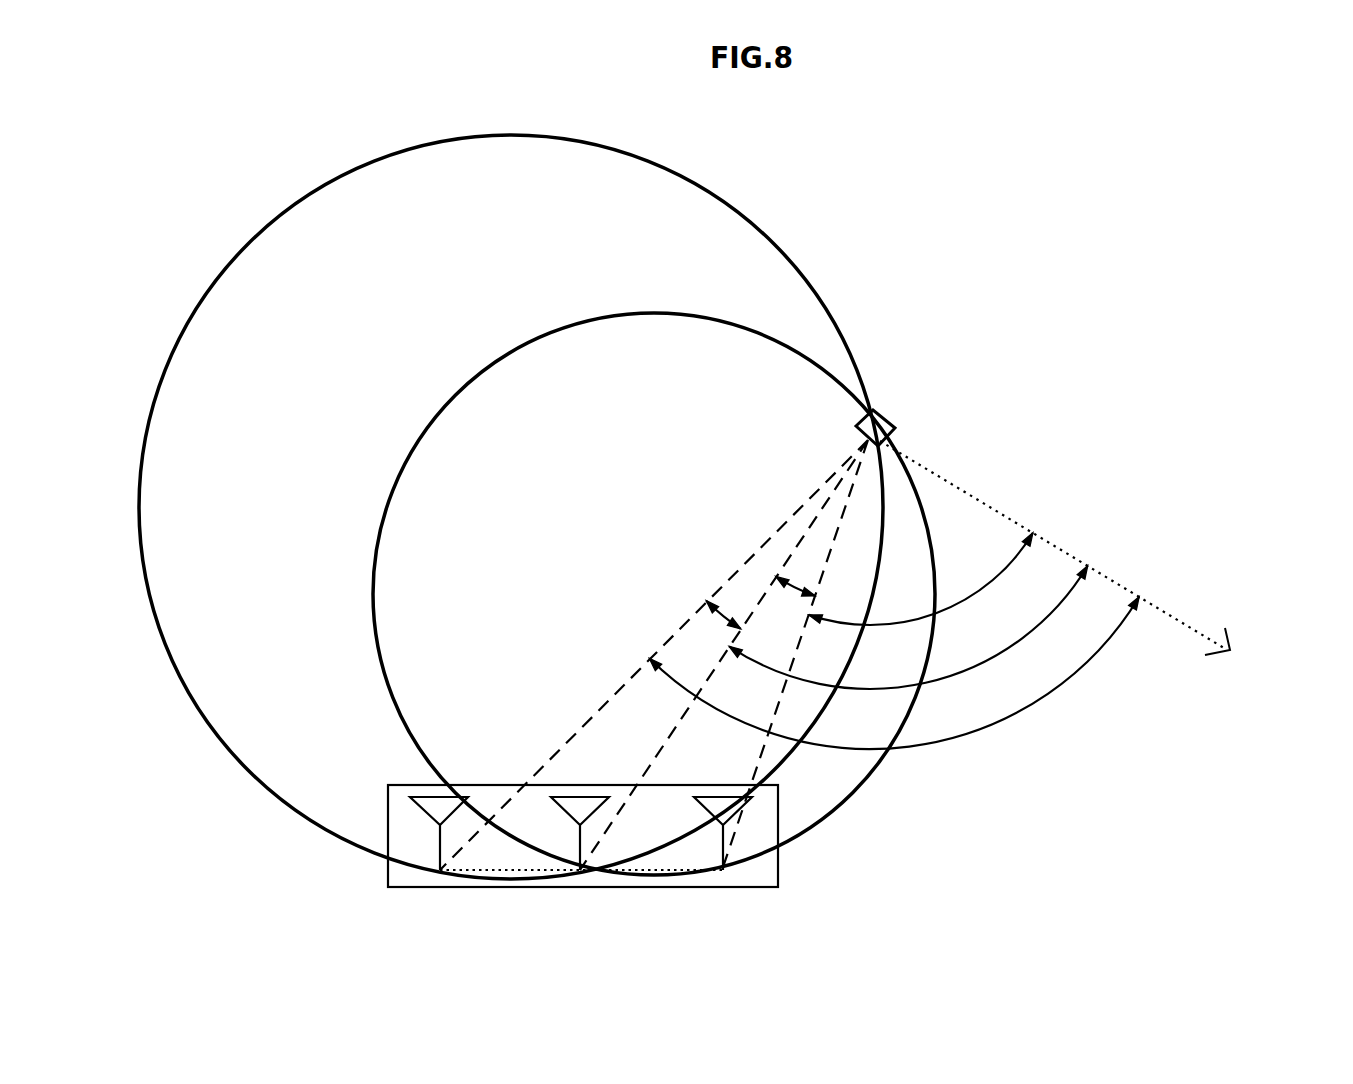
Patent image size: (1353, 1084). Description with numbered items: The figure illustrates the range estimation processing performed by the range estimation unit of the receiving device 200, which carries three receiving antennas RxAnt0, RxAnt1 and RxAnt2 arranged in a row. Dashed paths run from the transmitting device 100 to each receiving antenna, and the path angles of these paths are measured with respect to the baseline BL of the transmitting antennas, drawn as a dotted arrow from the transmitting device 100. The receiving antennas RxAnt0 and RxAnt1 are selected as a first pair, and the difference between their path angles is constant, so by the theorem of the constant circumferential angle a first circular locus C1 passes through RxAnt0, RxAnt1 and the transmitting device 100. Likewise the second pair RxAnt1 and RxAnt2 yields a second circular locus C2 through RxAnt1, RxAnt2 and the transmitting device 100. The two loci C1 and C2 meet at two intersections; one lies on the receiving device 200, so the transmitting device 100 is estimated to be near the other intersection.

The first circular locus C1 is at (757, 217).
The second circular locus C2 is at (640, 313).
The transmitting device 100 is at (888, 413).
The receiving device 200 is at (780, 833).
The baseline of the transmitting antennas BL is at (1132, 582).
The receiving antenna RxAnt0 is at (440, 827).
The receiving antenna RxAnt1 is at (580, 827).
The receiving antenna RxAnt2 is at (723, 852).